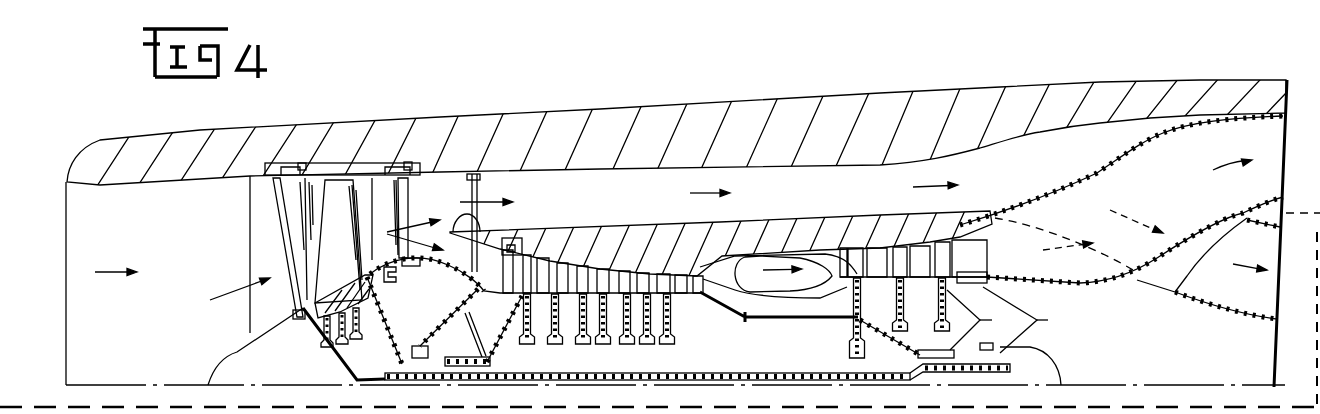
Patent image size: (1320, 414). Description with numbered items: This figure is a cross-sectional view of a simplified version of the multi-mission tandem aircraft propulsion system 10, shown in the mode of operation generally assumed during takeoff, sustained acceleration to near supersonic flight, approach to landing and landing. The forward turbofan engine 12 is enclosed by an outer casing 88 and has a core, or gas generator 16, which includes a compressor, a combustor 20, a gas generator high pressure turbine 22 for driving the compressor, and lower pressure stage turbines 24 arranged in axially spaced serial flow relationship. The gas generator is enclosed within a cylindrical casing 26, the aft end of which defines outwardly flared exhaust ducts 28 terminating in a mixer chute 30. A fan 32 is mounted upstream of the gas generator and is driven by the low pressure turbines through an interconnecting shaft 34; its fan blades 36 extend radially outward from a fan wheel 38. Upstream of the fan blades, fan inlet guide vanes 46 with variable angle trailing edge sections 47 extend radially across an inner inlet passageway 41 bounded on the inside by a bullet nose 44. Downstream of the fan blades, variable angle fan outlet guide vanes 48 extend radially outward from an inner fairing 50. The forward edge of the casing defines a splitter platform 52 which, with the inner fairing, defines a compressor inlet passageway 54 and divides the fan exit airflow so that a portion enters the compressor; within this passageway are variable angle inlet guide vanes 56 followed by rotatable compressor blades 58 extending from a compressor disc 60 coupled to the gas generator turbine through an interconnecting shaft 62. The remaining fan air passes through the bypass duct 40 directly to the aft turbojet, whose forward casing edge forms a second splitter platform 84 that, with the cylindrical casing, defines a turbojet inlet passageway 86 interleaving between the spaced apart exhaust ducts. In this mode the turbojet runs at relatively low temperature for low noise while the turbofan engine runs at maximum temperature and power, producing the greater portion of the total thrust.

The tandem aircraft propulsion system 10 is at (675, 222).
The forward turbofan engine 12 is at (708, 236).
The core or gas generator 16 is at (728, 312).
The combustor 20 is at (788, 285).
The gas generator high pressure turbine 22 is at (856, 255).
The lower pressure stage turbines 24 is at (945, 259).
The cylindrical casing 26 is at (557, 230).
The exhaust ducts 28 is at (1086, 285).
The mixer chute 30 is at (1250, 128).
The fan 32 is at (225, 294).
The interconnecting shaft 34 is at (741, 373).
The fan blades 36 is at (346, 263).
The fan wheel 38 is at (314, 333).
The median bypass duct 40 is at (648, 208).
The inner inlet passageway 41 is at (130, 310).
The bullet nose 44 is at (218, 362).
The fan inlet guide vanes 46 is at (249, 246).
The variable angle trailing edge sections 47 is at (291, 215).
The variable angle fan outlet guide vanes 48 is at (393, 206).
The inner fairing 50 is at (535, 311).
The splitter platform 52 is at (477, 219).
The compressor inlet passageway 54 is at (490, 268).
The variable angle inlet guide vanes 56 is at (512, 290).
The compressor blades 58 is at (550, 263).
The compressor disc 60 is at (575, 300).
The interconnecting shaft 62 is at (782, 318).
The second splitter platform 84 is at (1195, 244).
The inlet passageway 86 is at (1258, 302).
The outer casing 88 is at (518, 112).